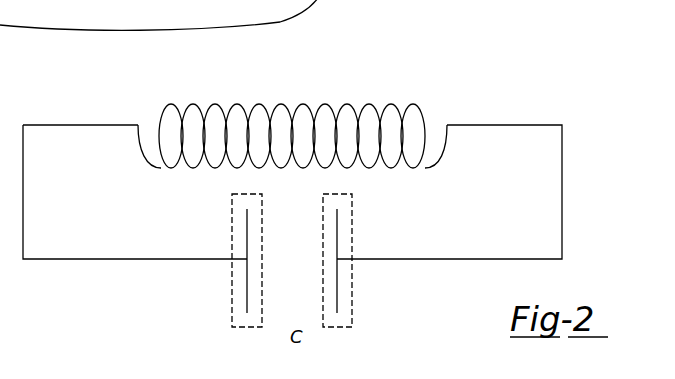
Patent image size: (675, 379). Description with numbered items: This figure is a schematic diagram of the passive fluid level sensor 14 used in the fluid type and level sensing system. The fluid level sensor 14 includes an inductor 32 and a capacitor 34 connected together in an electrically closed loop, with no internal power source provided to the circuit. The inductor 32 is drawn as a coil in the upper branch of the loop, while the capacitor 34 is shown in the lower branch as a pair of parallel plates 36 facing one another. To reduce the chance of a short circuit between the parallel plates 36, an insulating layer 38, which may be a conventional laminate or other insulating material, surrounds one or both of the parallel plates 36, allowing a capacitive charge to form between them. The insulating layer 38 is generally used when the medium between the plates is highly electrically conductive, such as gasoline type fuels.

The fluid level sensor 14 is at (507, 112).
The inductor 32 is at (368, 103).
The capacitor 34 is at (338, 295).
The parallel plates 36 is at (247, 288).
The insulating layer 38 is at (352, 230).